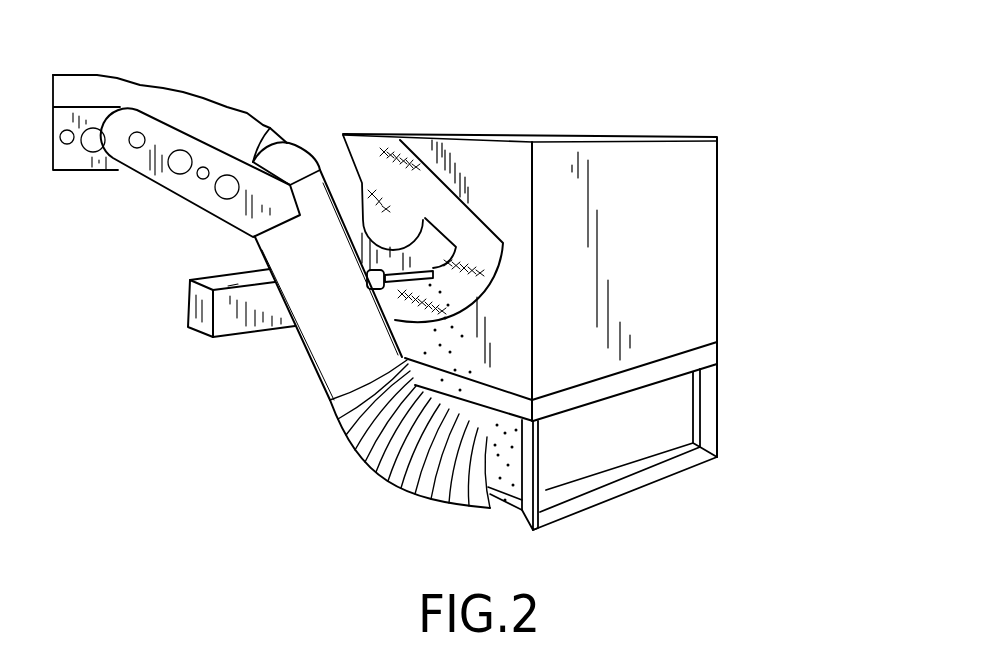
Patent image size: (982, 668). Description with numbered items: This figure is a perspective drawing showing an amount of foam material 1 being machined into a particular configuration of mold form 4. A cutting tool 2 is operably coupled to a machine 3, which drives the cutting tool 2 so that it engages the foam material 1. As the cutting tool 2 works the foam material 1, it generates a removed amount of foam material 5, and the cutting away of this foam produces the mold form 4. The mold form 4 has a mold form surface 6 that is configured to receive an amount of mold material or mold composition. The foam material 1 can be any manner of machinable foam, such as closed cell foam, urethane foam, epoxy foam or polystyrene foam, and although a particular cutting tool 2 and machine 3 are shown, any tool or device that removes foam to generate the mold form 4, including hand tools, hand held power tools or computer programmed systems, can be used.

The foam material 1 is at (730, 120).
The cutting tool 2 is at (425, 267).
The machine 3 is at (235, 325).
The mold form 4 is at (512, 136).
The removed amount of foam material 5 is at (505, 447).
The mold form surface 6 is at (386, 167).